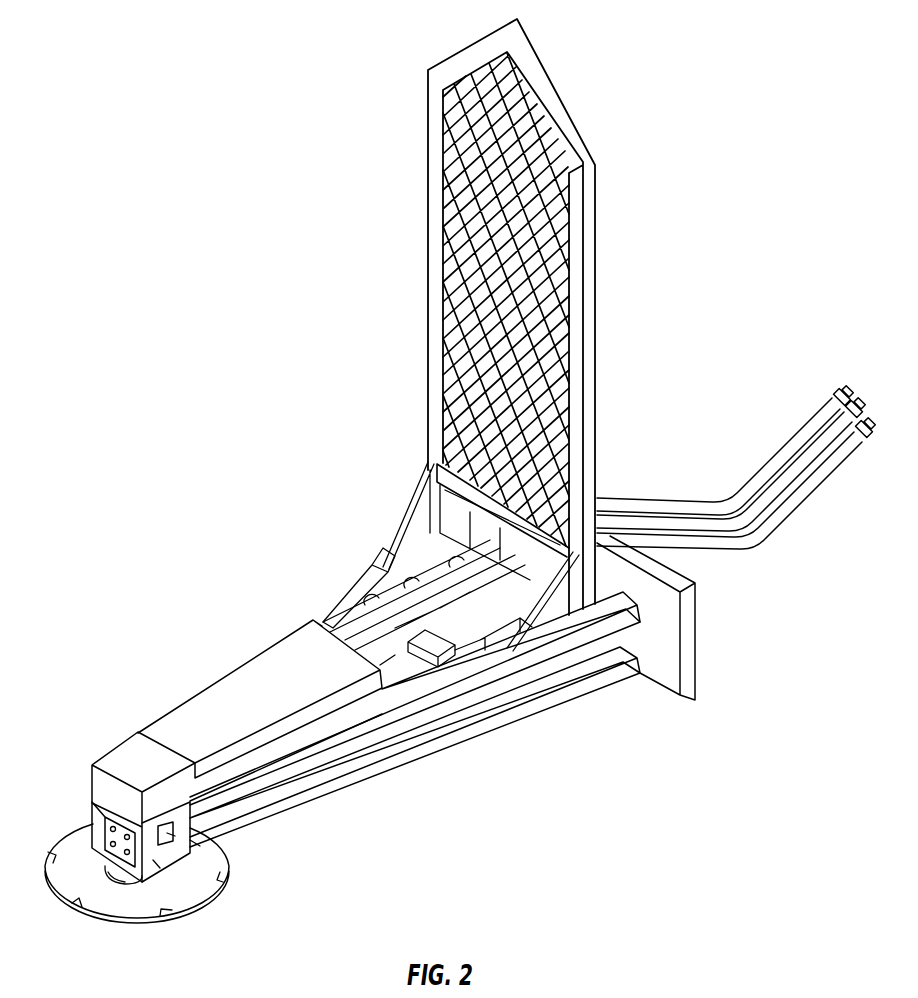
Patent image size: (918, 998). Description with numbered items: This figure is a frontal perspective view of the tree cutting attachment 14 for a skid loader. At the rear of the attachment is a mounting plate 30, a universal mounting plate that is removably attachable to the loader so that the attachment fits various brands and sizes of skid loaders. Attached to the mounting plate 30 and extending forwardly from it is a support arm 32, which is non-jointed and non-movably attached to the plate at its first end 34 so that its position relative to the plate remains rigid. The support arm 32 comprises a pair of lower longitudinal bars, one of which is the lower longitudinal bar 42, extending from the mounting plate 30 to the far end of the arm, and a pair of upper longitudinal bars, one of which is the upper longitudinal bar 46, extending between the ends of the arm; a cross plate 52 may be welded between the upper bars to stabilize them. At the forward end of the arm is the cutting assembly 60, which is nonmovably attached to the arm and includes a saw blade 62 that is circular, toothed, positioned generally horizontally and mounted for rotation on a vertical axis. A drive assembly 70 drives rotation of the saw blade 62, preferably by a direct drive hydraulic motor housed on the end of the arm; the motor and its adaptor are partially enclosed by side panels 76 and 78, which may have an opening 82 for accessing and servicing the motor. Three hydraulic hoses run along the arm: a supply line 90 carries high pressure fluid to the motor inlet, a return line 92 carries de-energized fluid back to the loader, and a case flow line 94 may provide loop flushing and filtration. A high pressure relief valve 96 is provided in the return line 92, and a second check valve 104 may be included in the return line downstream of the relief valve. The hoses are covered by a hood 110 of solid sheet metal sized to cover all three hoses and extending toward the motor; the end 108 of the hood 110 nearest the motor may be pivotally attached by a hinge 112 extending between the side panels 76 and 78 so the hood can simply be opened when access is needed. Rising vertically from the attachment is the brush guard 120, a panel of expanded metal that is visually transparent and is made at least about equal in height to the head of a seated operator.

The tree cutting attachment 14 is at (424, 154).
The brush guard 120 is at (463, 290).
The return line 92 is at (530, 585).
The case flow line 94 is at (460, 575).
The mounting plate 30 is at (688, 633).
The first end 34 is at (615, 612).
The lower longitudinal bar 42 is at (607, 680).
The upper longitudinal bar 46 is at (523, 660).
The support arm 32 is at (365, 727).
The hood 110 is at (232, 694).
The supply line 90 is at (338, 610).
The cross plate 52 is at (370, 580).
The second check valve 104 is at (458, 638).
The high pressure relief valve 96 is at (428, 657).
The end of the hood 108 is at (108, 762).
The hinge 112 is at (100, 767).
The drive assembly 70 is at (84, 807).
The side panel 76 is at (100, 827).
The cutting assembly 60 is at (107, 915).
The side panel 78 is at (153, 862).
The opening 82 is at (170, 834).
The saw blade 62 is at (196, 846).